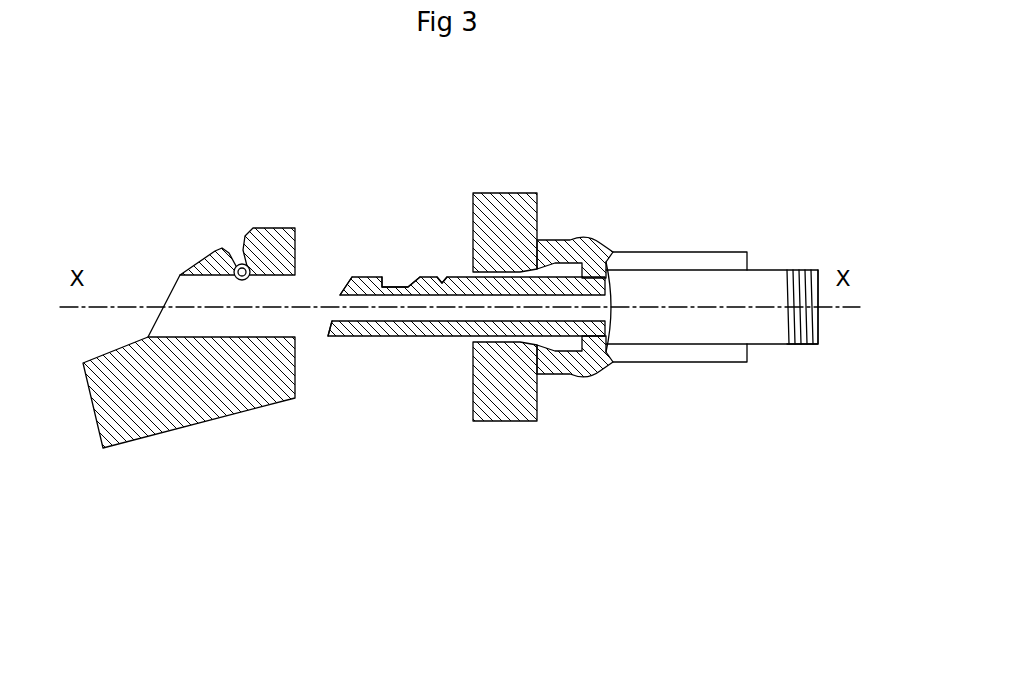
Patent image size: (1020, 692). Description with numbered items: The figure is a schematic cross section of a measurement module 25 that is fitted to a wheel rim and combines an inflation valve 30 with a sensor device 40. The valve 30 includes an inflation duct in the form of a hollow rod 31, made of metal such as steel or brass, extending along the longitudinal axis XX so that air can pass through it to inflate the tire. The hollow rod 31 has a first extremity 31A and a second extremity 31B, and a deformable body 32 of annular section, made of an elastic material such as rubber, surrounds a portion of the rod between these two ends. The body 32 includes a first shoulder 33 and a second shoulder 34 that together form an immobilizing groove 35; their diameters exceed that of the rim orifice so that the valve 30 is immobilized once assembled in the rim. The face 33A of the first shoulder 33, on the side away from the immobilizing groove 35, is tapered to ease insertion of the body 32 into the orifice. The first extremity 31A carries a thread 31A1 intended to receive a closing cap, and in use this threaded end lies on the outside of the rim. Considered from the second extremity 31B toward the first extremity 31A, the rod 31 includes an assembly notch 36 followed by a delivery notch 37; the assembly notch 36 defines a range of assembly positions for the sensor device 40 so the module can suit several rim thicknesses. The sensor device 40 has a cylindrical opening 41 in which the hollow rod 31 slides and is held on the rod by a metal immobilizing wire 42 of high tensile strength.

The measurement module 25 is at (177, 320).
The inflation valve 30 is at (574, 318).
The hollow rod 31 is at (355, 337).
The first extremity 31A is at (818, 327).
The thread 31A1 is at (812, 343).
The second extremity 31B is at (332, 306).
The deformable body 32 is at (635, 362).
The first shoulder 33 is at (588, 380).
The face of the first shoulder 33A is at (607, 370).
The second shoulder 34 is at (498, 422).
The immobilizing groove 35 is at (552, 238).
The assembly notch 36 is at (393, 288).
The delivery notch 37 is at (443, 277).
The sensor device 40 is at (185, 440).
The cylindrical opening 41 is at (170, 288).
The immobilizing wire 42 is at (236, 266).